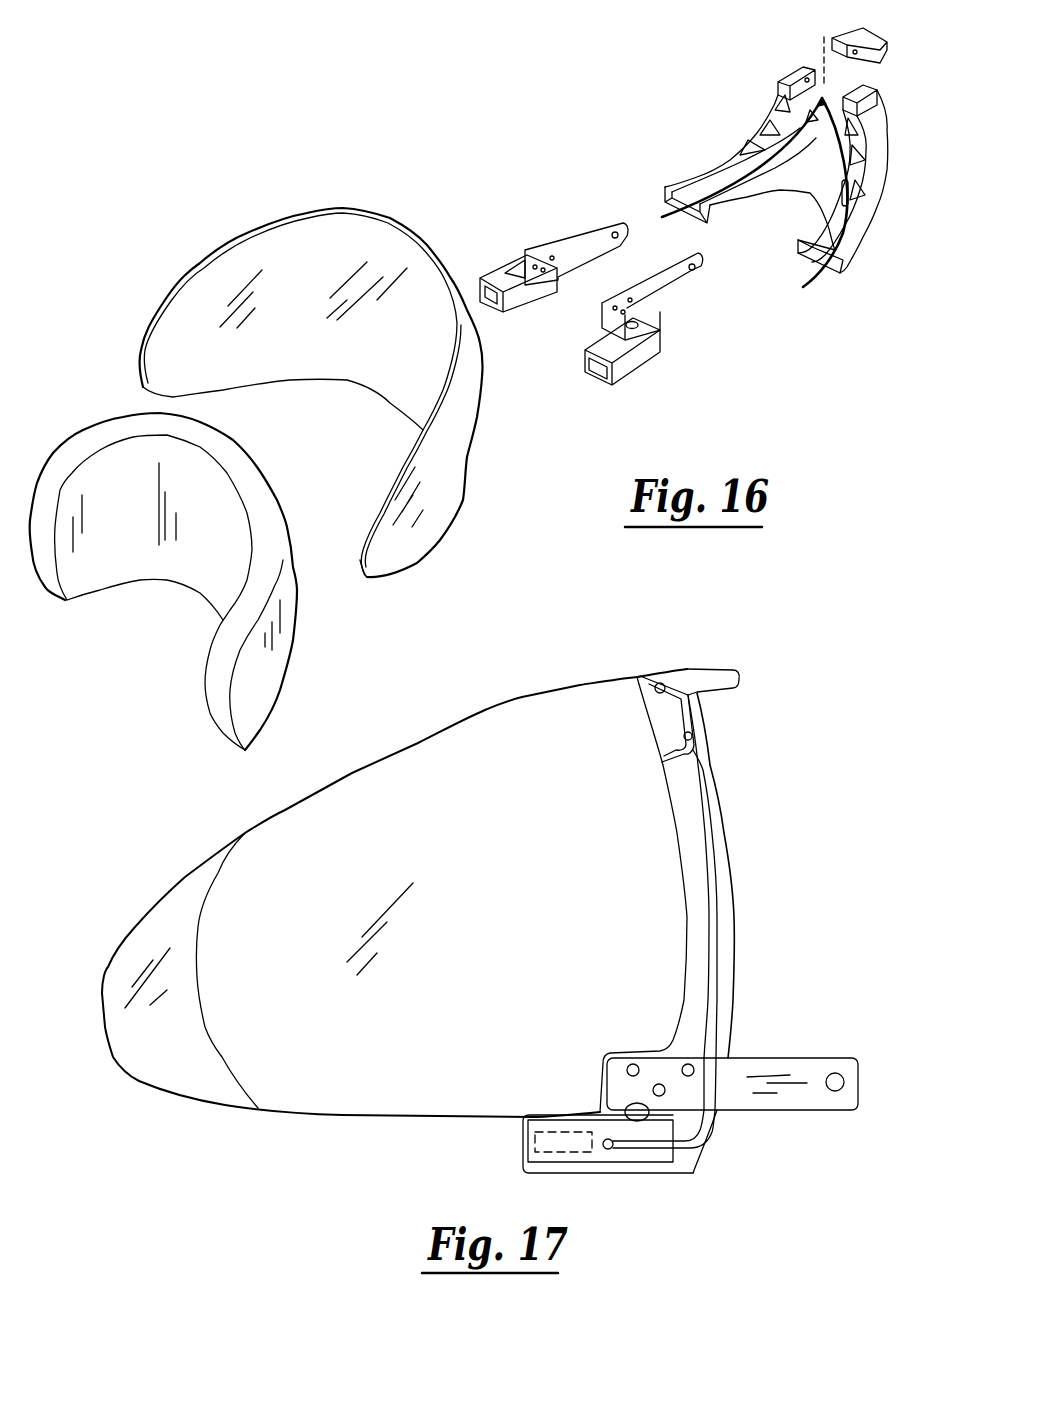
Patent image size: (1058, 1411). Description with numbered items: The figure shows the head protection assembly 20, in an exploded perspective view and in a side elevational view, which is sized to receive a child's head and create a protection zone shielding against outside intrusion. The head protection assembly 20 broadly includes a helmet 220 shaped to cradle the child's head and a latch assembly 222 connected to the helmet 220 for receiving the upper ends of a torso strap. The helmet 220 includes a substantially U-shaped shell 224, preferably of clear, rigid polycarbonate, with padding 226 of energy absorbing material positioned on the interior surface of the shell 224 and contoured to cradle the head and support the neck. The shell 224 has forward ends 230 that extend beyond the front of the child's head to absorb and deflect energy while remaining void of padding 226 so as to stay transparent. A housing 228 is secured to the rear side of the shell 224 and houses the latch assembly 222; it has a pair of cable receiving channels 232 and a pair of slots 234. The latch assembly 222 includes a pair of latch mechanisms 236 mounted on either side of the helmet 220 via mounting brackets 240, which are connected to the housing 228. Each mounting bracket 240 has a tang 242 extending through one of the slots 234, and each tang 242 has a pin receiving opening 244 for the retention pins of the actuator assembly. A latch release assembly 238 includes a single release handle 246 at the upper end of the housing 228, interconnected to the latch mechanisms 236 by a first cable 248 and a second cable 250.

In FIG. 16, the head protection assembly 20 is at (623, 68).
In FIG. 16, the helmet 220 is at (186, 253).
In FIG. 16, the latch assembly 222 is at (592, 382).
In FIG. 17, the latch assembly 222 is at (520, 1177).
In FIG. 16, the shell 224 is at (455, 508).
In FIG. 17, the shell 224 is at (522, 697).
In FIG. 16, the padding 226 is at (133, 590).
In FIG. 17, the padding 226 is at (212, 880).
In FIG. 16, the housing 228 is at (772, 102).
In FIG. 17, the housing 228 is at (727, 837).
In FIG. 16, the forward ends 230 is at (372, 580).
In FIG. 17, the forward ends 230 is at (100, 1013).
In FIG. 16, the cable receiving channels 232 is at (763, 157).
In FIG. 16, the slots 234 is at (848, 200).
In FIG. 16, the latch mechanisms 236 is at (508, 312).
In FIG. 17, the latch mechanisms 236 is at (587, 1177).
In FIG. 17, the latch release assembly 238 is at (722, 660).
In FIG. 16, the mounting brackets 240 is at (568, 238).
In FIG. 17, the mounting brackets 240 is at (752, 1056).
In FIG. 16, the tang 242 is at (575, 267).
In FIG. 17, the tang 242 is at (767, 1112).
In FIG. 16, the pin receiving opening 244 is at (610, 213).
In FIG. 17, the pin receiving opening 244 is at (835, 1060).
In FIG. 16, the release handle 246 is at (862, 30).
In FIG. 17, the release handle 246 is at (733, 689).
In FIG. 16, the first cable 248 is at (698, 193).
In FIG. 16, the second cable 250 is at (797, 268).
In FIG. 17, the second cable 250 is at (722, 910).